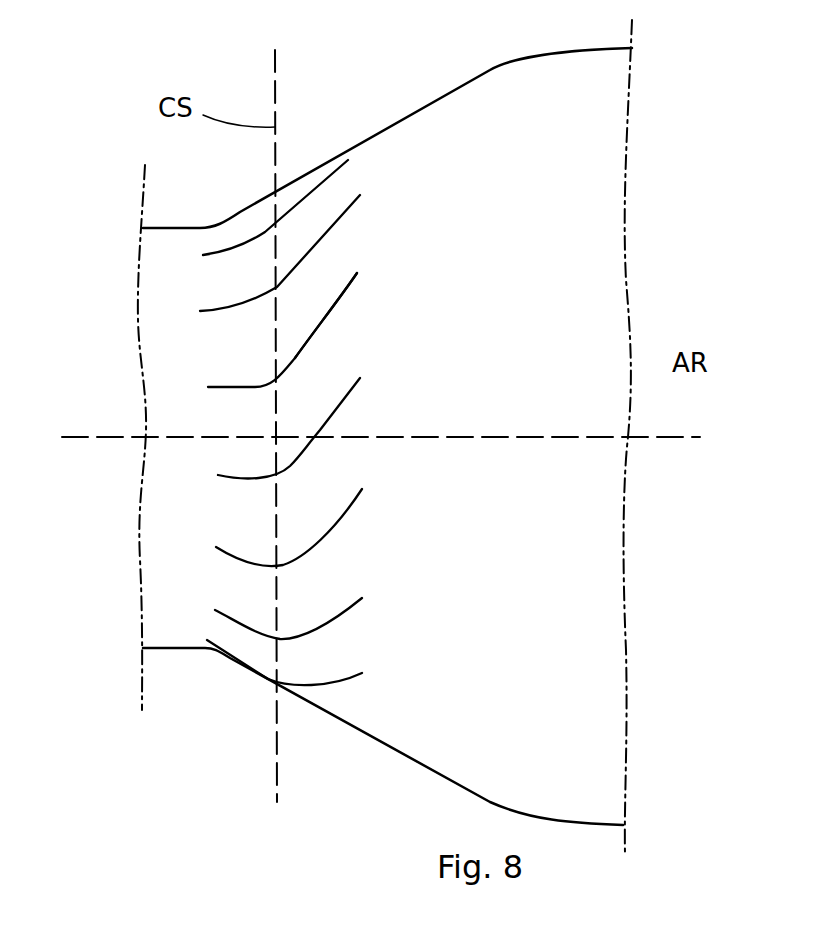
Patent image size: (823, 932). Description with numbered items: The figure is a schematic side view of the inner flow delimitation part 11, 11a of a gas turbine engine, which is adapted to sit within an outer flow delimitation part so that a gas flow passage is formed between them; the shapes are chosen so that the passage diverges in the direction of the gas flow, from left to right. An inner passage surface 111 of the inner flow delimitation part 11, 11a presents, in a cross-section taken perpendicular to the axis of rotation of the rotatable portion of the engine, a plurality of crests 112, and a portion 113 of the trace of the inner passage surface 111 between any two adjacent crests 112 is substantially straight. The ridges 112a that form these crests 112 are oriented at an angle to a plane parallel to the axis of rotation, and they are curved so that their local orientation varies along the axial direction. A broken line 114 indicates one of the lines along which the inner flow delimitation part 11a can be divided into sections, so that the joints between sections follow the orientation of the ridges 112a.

The inner flow delimitation part 11 is at (387, 124).
The inner flow delimitation part 11a is at (441, 128).
The inner passage surface 111 is at (417, 723).
The crests 112 is at (277, 380).
The ridges 112a is at (344, 300).
The portion of the trace 113 is at (275, 338).
The broken line 114 is at (233, 480).